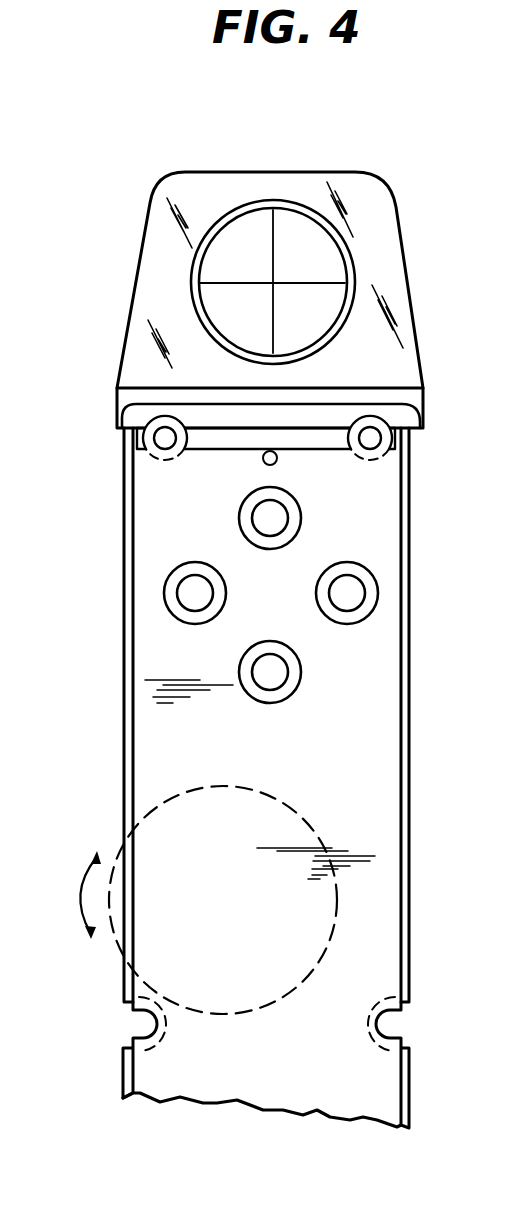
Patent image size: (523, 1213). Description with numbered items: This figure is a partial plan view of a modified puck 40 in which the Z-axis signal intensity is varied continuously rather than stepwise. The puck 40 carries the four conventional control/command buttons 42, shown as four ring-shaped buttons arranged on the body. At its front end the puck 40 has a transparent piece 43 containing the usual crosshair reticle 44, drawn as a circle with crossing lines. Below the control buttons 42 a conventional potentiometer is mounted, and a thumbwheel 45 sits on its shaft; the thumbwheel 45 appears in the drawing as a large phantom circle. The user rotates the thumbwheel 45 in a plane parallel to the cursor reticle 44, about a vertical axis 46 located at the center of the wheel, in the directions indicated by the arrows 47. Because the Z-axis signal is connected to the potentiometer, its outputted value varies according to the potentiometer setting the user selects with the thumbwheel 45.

The puck 40 is at (112, 606).
The control/command buttons 42 is at (318, 591).
The transparent piece 43 is at (120, 365).
The crosshair reticle 44 is at (272, 304).
The thumbwheel 45 is at (141, 819).
The vertical axis 46 is at (224, 899).
The arrows 47 is at (84, 895).